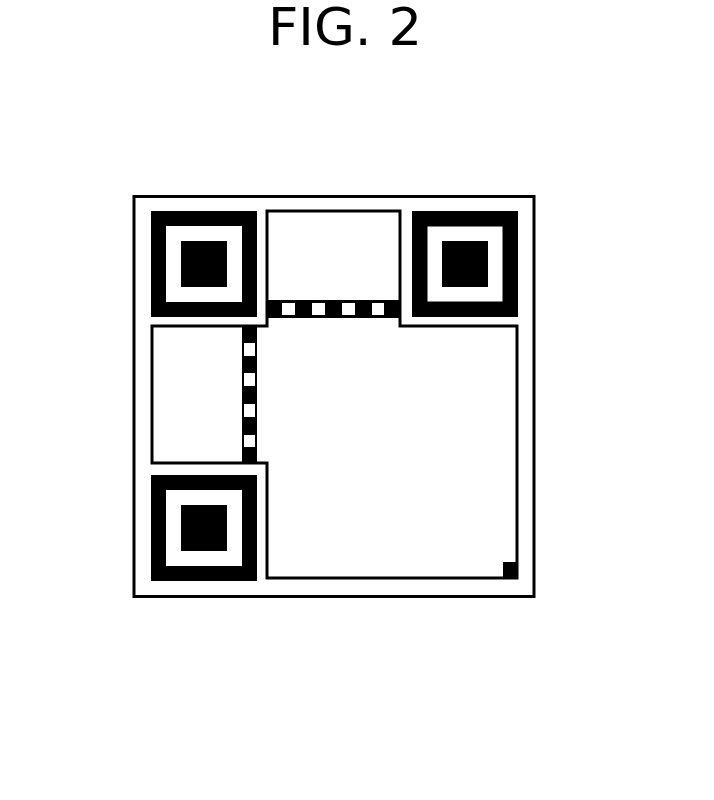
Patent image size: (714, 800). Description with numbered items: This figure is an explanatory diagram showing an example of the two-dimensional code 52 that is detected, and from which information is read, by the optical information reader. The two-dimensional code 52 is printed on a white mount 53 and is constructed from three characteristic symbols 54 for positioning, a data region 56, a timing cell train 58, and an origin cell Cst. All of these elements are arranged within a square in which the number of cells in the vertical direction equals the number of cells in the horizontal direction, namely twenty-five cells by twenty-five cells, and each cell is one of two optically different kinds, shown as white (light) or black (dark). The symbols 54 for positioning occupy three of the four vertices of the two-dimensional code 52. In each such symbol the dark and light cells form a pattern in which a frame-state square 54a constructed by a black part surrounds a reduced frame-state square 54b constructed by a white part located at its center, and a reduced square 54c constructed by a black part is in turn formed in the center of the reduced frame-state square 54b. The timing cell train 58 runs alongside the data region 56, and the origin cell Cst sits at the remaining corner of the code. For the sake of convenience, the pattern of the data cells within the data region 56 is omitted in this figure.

The two-dimensional code 52 is at (346, 160).
The white mount 53 is at (133, 266).
The symbol for positioning 54 is at (333, 361).
The frame-state square 54a is at (459, 211).
The reduced frame-state square 54b is at (497, 260).
The reduced square 54c is at (488, 270).
The data region 56 is at (355, 228).
The timing cell train 58 is at (304, 300).
The origin cell Cst is at (519, 568).